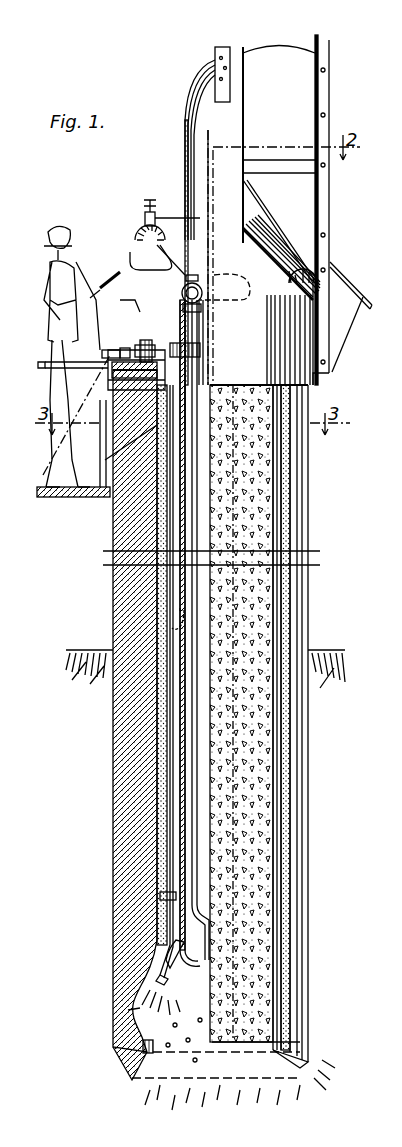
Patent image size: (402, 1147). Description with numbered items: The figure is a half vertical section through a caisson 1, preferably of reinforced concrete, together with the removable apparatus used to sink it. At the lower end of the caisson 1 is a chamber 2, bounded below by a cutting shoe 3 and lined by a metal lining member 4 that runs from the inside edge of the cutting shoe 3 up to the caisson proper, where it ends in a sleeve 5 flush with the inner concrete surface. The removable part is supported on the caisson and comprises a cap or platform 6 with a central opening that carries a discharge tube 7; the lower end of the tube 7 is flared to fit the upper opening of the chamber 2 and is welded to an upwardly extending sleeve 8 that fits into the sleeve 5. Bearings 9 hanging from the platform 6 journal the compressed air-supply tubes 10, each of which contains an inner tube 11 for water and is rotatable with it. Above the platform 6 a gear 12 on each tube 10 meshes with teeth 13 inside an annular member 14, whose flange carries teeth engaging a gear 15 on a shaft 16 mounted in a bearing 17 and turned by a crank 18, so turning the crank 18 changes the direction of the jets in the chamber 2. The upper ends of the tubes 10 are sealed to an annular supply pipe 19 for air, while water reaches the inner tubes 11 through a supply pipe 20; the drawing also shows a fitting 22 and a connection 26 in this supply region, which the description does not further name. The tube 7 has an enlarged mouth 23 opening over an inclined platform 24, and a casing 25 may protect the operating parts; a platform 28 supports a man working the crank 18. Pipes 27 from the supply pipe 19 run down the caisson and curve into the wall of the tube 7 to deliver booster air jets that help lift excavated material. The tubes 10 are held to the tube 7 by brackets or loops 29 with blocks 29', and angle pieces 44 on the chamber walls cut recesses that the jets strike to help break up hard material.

The caisson 1 is at (327, 513).
The chamber 2 is at (128, 1010).
The cutting shoe 3 is at (130, 1073).
The metal lining member 4 is at (160, 980).
The sleeve 5 is at (152, 940).
The cap or platform 6 is at (110, 392).
The discharge tube 7 is at (182, 713).
The sleeve 8 is at (160, 895).
The bearings 9 is at (186, 382).
The compressed air-supply tubes 10 is at (160, 506).
The inner tube 11 is at (172, 1026).
The gear 12 is at (200, 352).
The teeth 13 is at (138, 343).
The annular member 14 is at (130, 332).
The gear 15 is at (117, 345).
The shaft 16 is at (104, 348).
The bearing 17 is at (100, 368).
The crank 18 is at (38, 366).
The annular supply pipe 19 is at (180, 308).
The supply pipe 20 is at (148, 210).
The valve 22 is at (180, 287).
The enlarged mouth 23 is at (272, 210).
The inclined platform 24 is at (353, 277).
The casing 25 is at (303, 336).
The hose 26 is at (118, 288).
The pipes 27 is at (118, 543).
The platform 28 is at (56, 497).
The brackets or loops 29 is at (122, 449).
The blocks 29' is at (224, 392).
The angle pieces 44 is at (148, 1056).